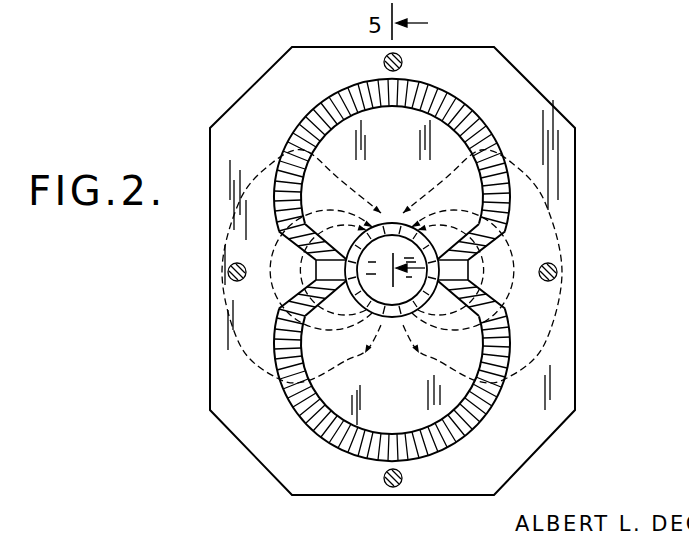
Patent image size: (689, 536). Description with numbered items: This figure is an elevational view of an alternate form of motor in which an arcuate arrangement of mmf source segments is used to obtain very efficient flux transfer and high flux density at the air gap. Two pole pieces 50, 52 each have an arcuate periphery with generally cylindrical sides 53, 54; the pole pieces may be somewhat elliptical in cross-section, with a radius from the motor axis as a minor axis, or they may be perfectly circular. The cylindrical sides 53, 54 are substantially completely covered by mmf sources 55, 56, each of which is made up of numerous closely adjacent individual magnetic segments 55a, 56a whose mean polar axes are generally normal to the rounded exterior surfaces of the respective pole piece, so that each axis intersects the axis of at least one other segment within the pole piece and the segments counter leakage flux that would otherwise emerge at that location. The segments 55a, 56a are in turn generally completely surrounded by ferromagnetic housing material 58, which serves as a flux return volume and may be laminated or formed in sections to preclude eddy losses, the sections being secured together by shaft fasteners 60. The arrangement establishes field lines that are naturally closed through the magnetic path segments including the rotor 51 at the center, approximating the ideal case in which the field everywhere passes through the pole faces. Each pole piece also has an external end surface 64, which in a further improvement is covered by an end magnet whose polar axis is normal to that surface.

The pole piece 50 is at (412, 149).
The rotor 51 is at (385, 304).
The pole piece 52 is at (410, 402).
The cylindrical side 53 is at (457, 103).
The cylindrical side 54 is at (489, 412).
The mmf source 55 is at (497, 114).
The magnetic segment 55a is at (305, 118).
The mmf source 56 is at (295, 426).
The magnetic segment 56a is at (292, 408).
The ferromagnetic housing material 58 is at (212, 368).
The shaft fastener 60 is at (383, 62).
The external end surface 64 is at (310, 152).